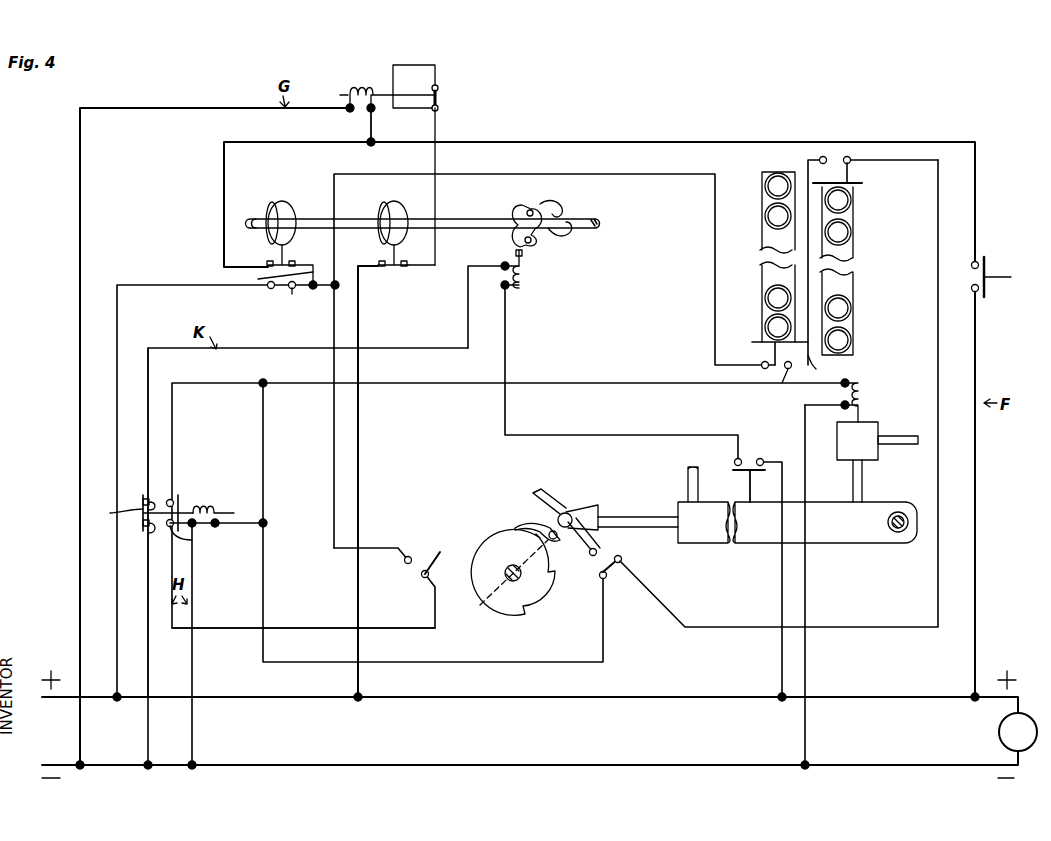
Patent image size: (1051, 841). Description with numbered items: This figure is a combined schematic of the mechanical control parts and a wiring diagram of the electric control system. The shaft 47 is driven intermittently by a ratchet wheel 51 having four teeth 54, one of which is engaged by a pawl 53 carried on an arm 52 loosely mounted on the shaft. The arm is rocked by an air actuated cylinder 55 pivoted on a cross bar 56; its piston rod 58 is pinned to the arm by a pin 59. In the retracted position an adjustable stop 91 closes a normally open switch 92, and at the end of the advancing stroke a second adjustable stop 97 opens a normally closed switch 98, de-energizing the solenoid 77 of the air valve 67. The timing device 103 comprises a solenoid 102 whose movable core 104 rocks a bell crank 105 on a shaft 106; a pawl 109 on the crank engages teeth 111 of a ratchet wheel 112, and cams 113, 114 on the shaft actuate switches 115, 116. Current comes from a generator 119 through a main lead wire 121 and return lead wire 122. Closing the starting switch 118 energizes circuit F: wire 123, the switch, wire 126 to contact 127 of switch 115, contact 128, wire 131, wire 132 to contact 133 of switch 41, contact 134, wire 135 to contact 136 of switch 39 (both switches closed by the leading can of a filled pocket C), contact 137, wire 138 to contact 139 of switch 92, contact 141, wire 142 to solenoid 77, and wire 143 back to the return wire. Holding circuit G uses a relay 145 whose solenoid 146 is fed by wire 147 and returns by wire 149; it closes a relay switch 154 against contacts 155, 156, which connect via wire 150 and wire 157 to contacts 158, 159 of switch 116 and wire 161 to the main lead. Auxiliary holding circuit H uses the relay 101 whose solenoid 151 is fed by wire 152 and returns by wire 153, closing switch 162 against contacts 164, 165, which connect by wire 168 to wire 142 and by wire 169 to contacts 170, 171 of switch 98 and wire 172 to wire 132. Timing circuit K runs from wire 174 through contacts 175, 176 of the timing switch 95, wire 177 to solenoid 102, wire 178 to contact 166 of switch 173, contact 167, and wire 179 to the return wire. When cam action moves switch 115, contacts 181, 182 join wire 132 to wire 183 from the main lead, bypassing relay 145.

The switch 39 is at (862, 182).
The switch 41 is at (765, 356).
The shaft 47 is at (475, 604).
The ratchet wheel 51 is at (513, 572).
The arm 52 is at (567, 514).
The pawl 53 is at (538, 522).
The teeth 54 is at (514, 619).
The air actuated cylinder 55 is at (797, 505).
The cross bar 56 is at (893, 532).
The piston rod 58 is at (637, 516).
The pin 59 is at (590, 506).
The air valve 67 is at (877, 462).
The solenoid 77 is at (862, 388).
The adjustable stop 91 is at (591, 554).
The switch 92 is at (602, 554).
The timing switch 95 is at (748, 487).
The adjustable stop 97 is at (539, 490).
The switch 98 is at (434, 556).
The relay 101 is at (232, 462).
The solenoid 102 is at (524, 278).
The timing device 103 is at (309, 205).
The movable core 104 is at (515, 252).
The bell crank 105 is at (546, 238).
The shaft 106 is at (467, 225).
The pawl 109 is at (538, 201).
The teeth 111 is at (544, 205).
The ratchet wheel 112 is at (556, 214).
The cam 113 is at (275, 212).
The cam 114 is at (390, 206).
The switch 115 is at (284, 248).
The switch 116 is at (396, 258).
The starting switch 118 is at (1002, 276).
The generator 119 is at (999, 735).
The main lead wire 121 is at (246, 697).
The return lead wire 122 is at (90, 766).
The wire 123 is at (986, 320).
The wire 126 is at (642, 142).
The contact 127 is at (267, 262).
The contact 128 is at (294, 264).
The wire 131 is at (258, 278).
The wire 132 is at (324, 286).
The contact 133 is at (760, 369).
The contact 134 is at (786, 377).
The wire 135 is at (827, 368).
The contact 136 is at (818, 154).
The contact 137 is at (853, 153).
The wire 138 is at (658, 590).
The contact 139 is at (622, 560).
The contact 141 is at (600, 582).
The wire 142 is at (263, 486).
The wire 143 is at (805, 480).
The relay 145 is at (331, 77).
The solenoid 146 is at (351, 92).
The wire 147 is at (373, 128).
The wire 149 is at (189, 108).
The wire 150 is at (421, 65).
The solenoid 151 is at (214, 511).
The wire 152 is at (245, 528).
The wire 153 is at (196, 567).
The movable relay switch 154 is at (409, 95).
The contact 155 is at (440, 86).
The contact 156 is at (440, 108).
The wire 157 is at (440, 138).
The contact 158 is at (398, 265).
The contact 159 is at (379, 263).
The wire 161 is at (360, 300).
The switch 162 is at (181, 498).
The contact 164 is at (175, 500).
The contact 165 is at (192, 540).
The contact 166 is at (147, 498).
The contact 167 is at (148, 532).
The wire 168 is at (207, 381).
The wire 169 is at (201, 628).
The contact 170 is at (428, 574).
The contact 171 is at (410, 556).
The wire 172 is at (334, 333).
The switch 173 is at (112, 513).
The wire 174 is at (776, 576).
The contact 175 is at (762, 460).
The contact 176 is at (742, 457).
The wire 177 is at (510, 345).
The wire 178 is at (416, 343).
The wire 179 is at (148, 676).
The contact 181 is at (271, 288).
The contact 182 is at (286, 297).
The wire 183 is at (176, 284).
The filled pocket C is at (766, 272).